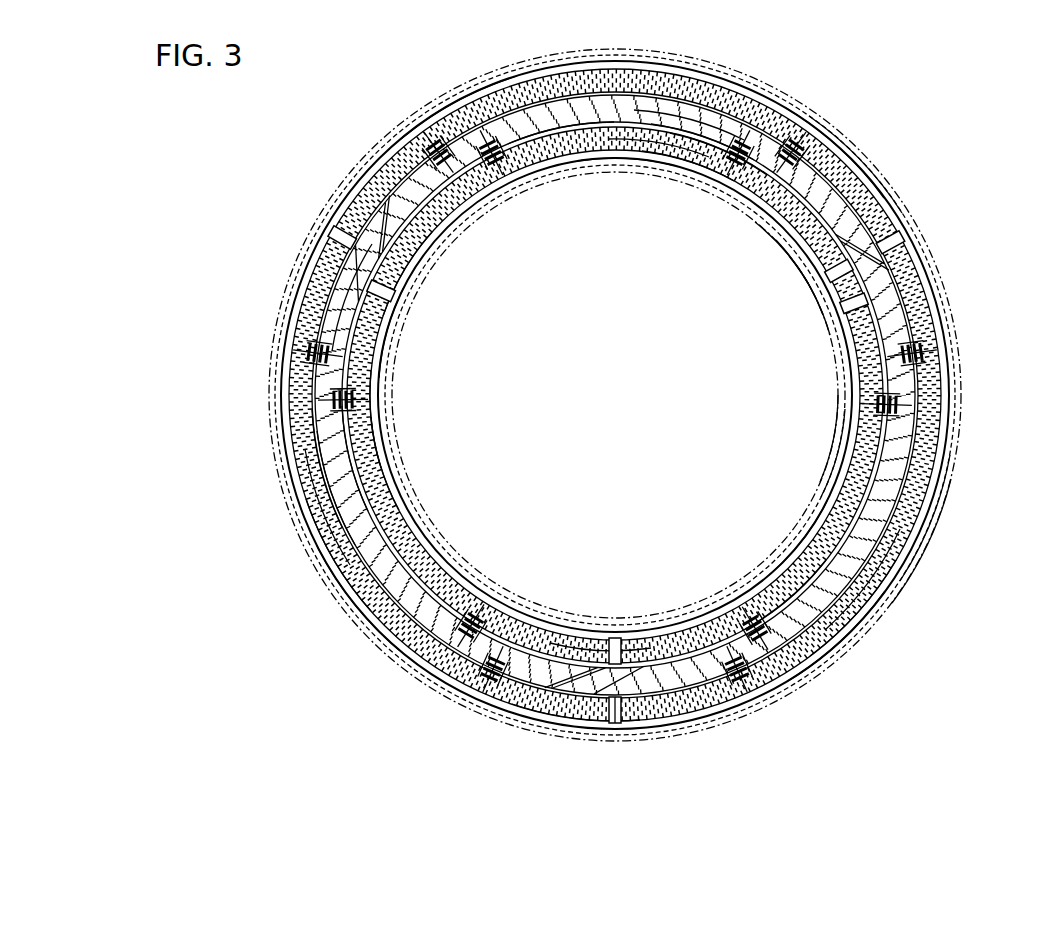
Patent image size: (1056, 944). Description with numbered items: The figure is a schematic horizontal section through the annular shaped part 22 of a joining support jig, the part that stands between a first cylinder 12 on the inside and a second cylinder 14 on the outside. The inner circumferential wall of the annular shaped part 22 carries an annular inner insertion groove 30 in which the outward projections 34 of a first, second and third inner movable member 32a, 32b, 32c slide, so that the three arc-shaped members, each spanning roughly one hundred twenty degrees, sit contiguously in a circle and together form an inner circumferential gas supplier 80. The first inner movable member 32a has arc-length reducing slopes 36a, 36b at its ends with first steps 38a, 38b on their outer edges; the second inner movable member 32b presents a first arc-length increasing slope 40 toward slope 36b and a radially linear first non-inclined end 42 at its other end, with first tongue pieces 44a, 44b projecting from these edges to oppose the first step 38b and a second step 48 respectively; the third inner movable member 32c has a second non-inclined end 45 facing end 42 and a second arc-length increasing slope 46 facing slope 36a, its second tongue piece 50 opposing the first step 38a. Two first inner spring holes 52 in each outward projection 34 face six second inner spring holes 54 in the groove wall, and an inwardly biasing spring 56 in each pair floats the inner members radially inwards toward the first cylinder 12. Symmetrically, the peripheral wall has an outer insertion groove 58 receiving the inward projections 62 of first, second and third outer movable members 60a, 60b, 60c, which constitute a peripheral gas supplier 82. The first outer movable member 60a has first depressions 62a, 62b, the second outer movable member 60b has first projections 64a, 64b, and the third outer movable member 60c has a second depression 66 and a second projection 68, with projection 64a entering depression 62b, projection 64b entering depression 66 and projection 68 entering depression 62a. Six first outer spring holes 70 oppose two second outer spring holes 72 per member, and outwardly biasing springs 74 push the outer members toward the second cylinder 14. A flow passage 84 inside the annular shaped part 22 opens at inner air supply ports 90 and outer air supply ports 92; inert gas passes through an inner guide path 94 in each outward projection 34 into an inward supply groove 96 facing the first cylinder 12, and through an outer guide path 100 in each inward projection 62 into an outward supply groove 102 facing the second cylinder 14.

The first cylinder 12 is at (822, 452).
The second cylinder 14 is at (952, 480).
The annular shaped part 22 is at (632, 100).
The inner insertion groove 30 is at (868, 205).
The first inner movable member 32a is at (372, 420).
The second inner movable member 32b is at (625, 160).
The third inner movable member 32c is at (836, 440).
The outward projection 34 is at (392, 490).
The arc-length reducing slope 36a is at (600, 655).
The arc-length reducing slope 36b is at (385, 332).
The first step 38a is at (577, 722).
The first step 38b is at (345, 295).
The first arc-length increasing slope 40 is at (340, 232).
The first non-inclined end 42 is at (830, 276).
The first tongue piece 44a is at (367, 288).
The first tongue piece 44b is at (875, 290).
The second non-inclined end 45 is at (800, 300).
The second arc-length increasing slope 46 is at (614, 650).
The second step 48 is at (905, 258).
The second tongue piece 50 is at (610, 732).
The first inner spring hole 52 is at (540, 150).
The second inner spring hole 54 is at (487, 138).
The inwardly biasing spring 56 is at (498, 140).
The outer insertion groove 58 is at (584, 100).
The first outer movable member 60a is at (356, 600).
The second outer movable member 60b is at (862, 162).
The third outer movable member 60c is at (935, 548).
The inward projection 62 is at (395, 265).
The first depression 62a is at (610, 660).
The first depression 62b is at (402, 300).
The first projection 64a is at (420, 275).
The first projection 64b is at (882, 232).
The second depression 66 is at (780, 292).
The second projection 68 is at (622, 735).
The first outer spring hole 70 is at (490, 165).
The second outer spring hole 72 is at (434, 148).
The outwardly biasing spring 74 is at (448, 165).
The inner circumferential gas supplier 80 is at (756, 210).
The peripheral gas supplier 82 is at (790, 95).
The flow passage 84 is at (872, 585).
The inner air supply port 90 is at (352, 460).
The outer air supply port 92 is at (705, 135).
The inner guide path 94 is at (382, 467).
The inward supply groove 96 is at (402, 515).
The outer guide path 100 is at (690, 120).
The outward supply groove 102 is at (455, 100).